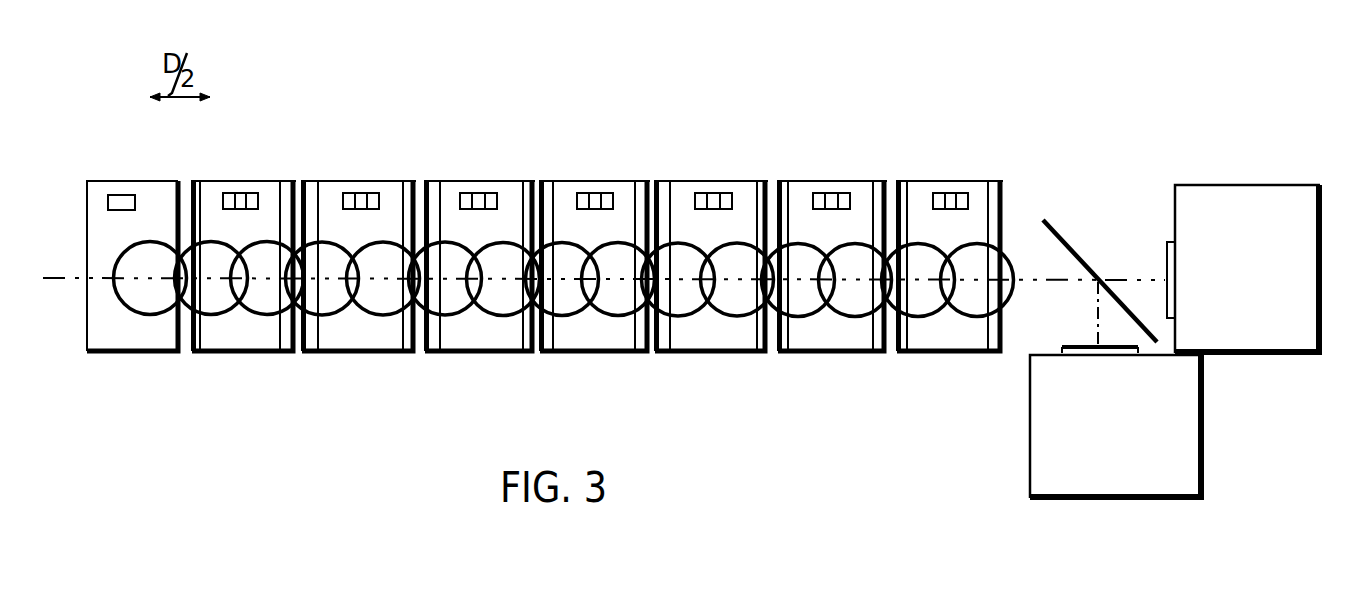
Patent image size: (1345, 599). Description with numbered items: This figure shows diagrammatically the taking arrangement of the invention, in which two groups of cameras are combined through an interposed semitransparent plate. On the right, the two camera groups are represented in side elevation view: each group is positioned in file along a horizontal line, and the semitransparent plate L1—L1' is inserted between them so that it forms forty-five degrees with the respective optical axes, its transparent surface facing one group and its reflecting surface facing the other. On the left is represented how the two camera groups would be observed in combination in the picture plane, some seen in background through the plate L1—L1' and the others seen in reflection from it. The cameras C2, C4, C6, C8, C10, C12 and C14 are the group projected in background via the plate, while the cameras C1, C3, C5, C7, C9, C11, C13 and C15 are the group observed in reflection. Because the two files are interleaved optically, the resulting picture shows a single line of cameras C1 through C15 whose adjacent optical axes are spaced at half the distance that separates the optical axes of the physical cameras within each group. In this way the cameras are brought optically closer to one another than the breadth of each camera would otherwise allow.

The taking camera C1 is at (150, 300).
The taking camera C2 is at (210, 300).
The taking camera C3 is at (267, 227).
The taking camera C4 is at (322, 227).
The taking camera C5 is at (383, 227).
The taking camera C6 is at (445, 227).
The taking camera C7 is at (503, 227).
The taking camera C8 is at (562, 227).
The taking camera C9 is at (618, 227).
The taking camera C10 is at (678, 227).
The taking camera C11 is at (737, 227).
The taking camera C12 is at (798, 228).
The taking camera C13 is at (855, 228).
The taking camera C14 is at (918, 228).
The taking camera C15 is at (977, 228).
The semitransparent plate L1 is at (1100, 272).
The semitransparent plate L1' is at (1154, 280).